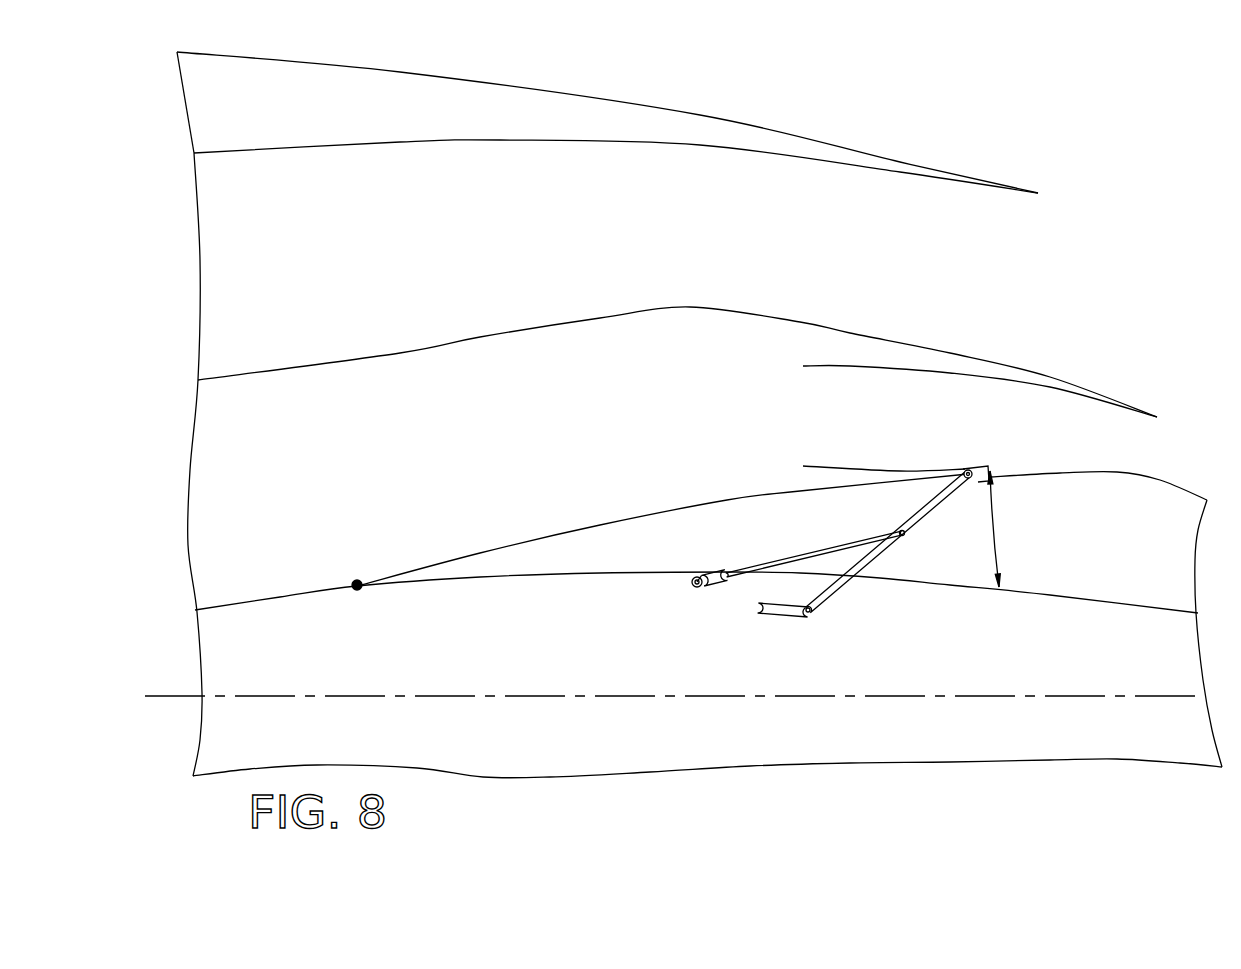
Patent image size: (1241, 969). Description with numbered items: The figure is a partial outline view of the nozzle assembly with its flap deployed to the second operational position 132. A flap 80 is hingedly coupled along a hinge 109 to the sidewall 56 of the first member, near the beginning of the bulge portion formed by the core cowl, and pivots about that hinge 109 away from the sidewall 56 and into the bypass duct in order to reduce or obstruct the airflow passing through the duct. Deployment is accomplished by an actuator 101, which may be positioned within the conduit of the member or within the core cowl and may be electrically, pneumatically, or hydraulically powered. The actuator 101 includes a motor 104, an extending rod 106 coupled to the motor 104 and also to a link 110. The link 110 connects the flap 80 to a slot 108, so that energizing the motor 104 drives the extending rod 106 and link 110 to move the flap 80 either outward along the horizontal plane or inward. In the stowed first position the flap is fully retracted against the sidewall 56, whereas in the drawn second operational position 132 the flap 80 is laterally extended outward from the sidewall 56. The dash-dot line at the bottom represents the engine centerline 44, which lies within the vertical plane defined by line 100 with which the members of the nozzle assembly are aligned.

The sidewall 56 is at (265, 597).
The flap 80 is at (726, 498).
The hinge 109 is at (358, 584).
The actuator 101 is at (820, 543).
The link 110 is at (937, 496).
The slot 108 is at (785, 608).
The extending rod 106 is at (778, 559).
The motor 104 is at (712, 582).
The second operational position 132 is at (1008, 472).
The centerline 44 is at (670, 749).
The line defining vertical plane 100 is at (1057, 696).